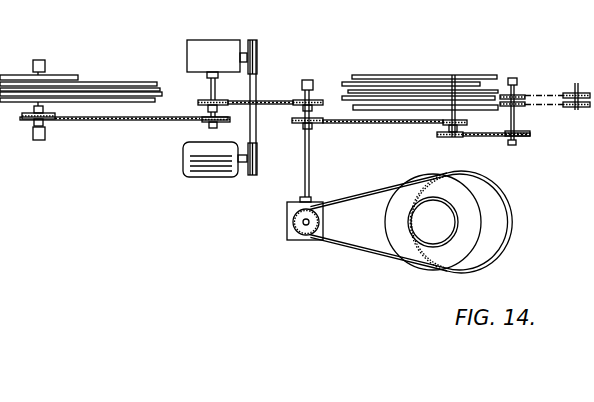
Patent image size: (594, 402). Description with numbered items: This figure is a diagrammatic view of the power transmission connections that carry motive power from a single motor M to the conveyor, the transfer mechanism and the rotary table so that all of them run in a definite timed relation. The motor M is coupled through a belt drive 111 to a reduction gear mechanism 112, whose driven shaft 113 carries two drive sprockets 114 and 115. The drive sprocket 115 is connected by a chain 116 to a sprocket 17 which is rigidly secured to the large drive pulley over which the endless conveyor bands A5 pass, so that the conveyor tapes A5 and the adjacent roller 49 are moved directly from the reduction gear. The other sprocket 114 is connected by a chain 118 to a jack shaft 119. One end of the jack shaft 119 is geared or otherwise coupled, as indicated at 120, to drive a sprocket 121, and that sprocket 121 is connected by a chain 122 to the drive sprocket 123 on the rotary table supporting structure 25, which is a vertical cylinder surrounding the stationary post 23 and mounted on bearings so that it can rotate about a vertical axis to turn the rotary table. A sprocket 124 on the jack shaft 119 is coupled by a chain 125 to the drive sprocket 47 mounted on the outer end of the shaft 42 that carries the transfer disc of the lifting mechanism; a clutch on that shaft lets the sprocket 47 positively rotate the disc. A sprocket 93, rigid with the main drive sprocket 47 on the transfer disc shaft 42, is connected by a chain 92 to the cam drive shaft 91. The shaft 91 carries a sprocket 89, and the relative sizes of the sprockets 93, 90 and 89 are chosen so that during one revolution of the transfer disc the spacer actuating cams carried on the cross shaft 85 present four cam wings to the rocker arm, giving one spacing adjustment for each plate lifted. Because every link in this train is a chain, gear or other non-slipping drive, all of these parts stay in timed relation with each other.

The roller 49 is at (16, 75).
The endless belts, bands or tapes A5 is at (121, 82).
The sprocket shaft 17 is at (22, 120).
The chain 116 is at (117, 121).
The reduction gear mechanism 112 is at (209, 44).
The belt drive 111 is at (257, 138).
The motor M is at (192, 177).
The driven shaft 113 is at (216, 88).
The drive sprocket 114 is at (203, 100).
The drive sprocket 115 is at (221, 122).
The chain 118 is at (268, 101).
The jack shaft 119 is at (310, 171).
The sprocket 124 is at (320, 124).
The chain 125 is at (383, 124).
The shaft 42 is at (452, 88).
The drive sprocket 47 is at (467, 122).
The sprocket 93 is at (453, 138).
The chain 92 is at (490, 137).
The sprocket 90 is at (516, 90).
The drive shaft 91 is at (514, 145).
The sprocket 89 is at (575, 92).
The cross shaft 85 is at (576, 110).
The gear coupling 120 is at (324, 228).
The sprocket 121 is at (305, 226).
The chain 122 is at (369, 254).
The drive sprocket 123 is at (398, 233).
The stationary post 23 is at (458, 216).
The rotary table supporting structure 25 is at (479, 240).